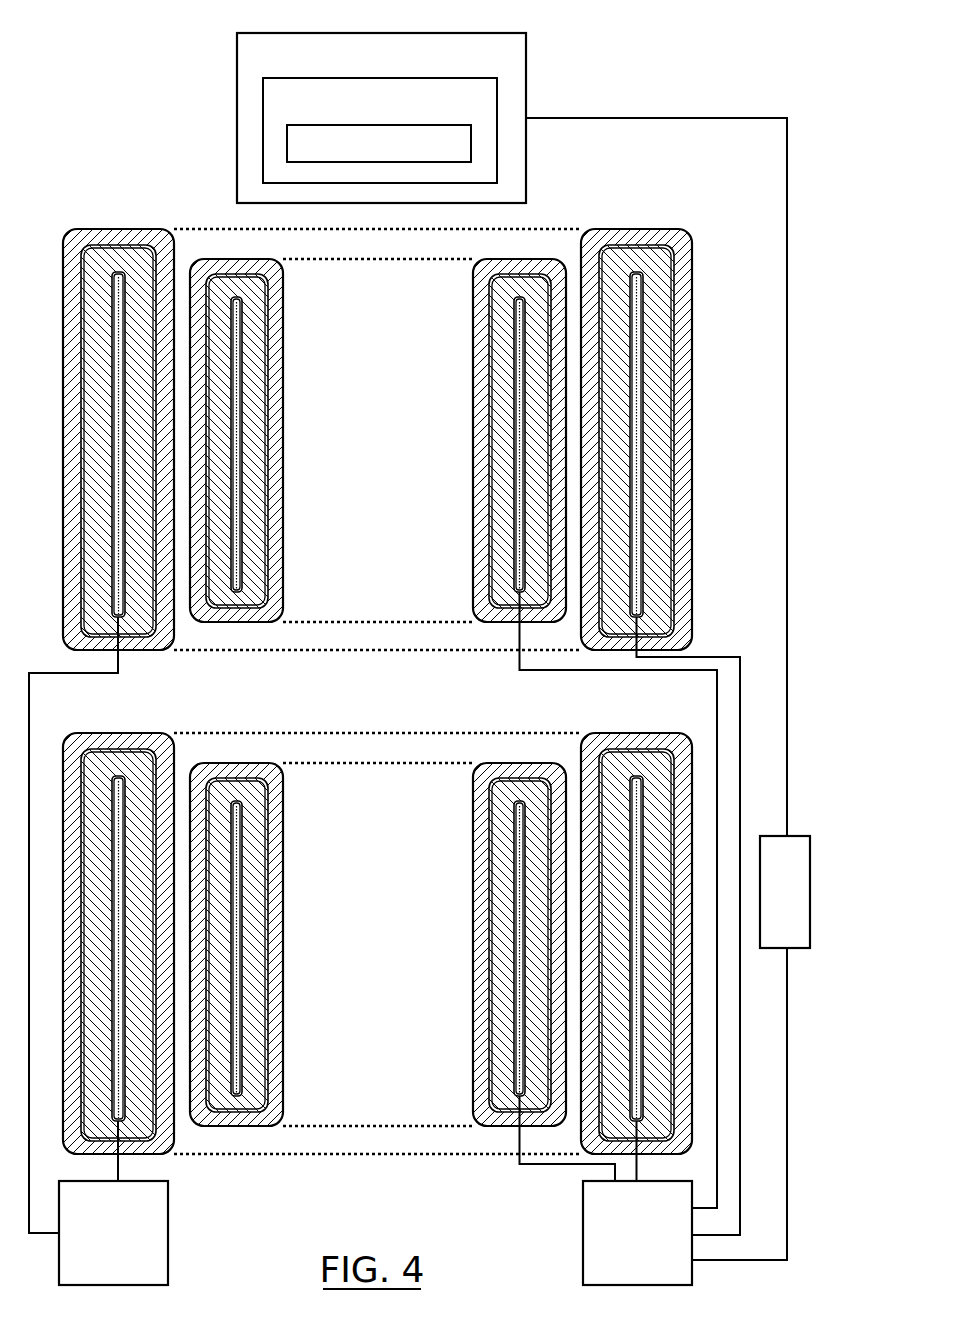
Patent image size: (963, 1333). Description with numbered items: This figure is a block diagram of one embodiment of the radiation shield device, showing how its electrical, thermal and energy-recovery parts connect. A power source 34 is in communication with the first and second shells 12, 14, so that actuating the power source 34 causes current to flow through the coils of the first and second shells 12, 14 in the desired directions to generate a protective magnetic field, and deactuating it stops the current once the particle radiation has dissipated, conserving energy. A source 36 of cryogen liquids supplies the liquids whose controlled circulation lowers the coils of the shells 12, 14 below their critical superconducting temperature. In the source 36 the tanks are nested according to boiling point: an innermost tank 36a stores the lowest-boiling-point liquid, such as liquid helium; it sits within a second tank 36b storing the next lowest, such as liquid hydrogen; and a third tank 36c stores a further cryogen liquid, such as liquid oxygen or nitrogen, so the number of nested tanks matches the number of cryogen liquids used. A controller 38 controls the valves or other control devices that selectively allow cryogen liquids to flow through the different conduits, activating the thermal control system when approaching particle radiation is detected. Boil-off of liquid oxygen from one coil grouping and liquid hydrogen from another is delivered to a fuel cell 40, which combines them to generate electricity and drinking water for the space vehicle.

The first shell 12 is at (241, 259).
The second shell 14 is at (120, 229).
The power source 34 is at (583, 1235).
The source of cryogen liquids 36 is at (434, 103).
The innermost tank 36a is at (471, 143).
The second tank 36b is at (497, 113).
The third tank 36c is at (510, 43).
The controller 38 is at (768, 836).
The fuel cell 40 is at (168, 1233).